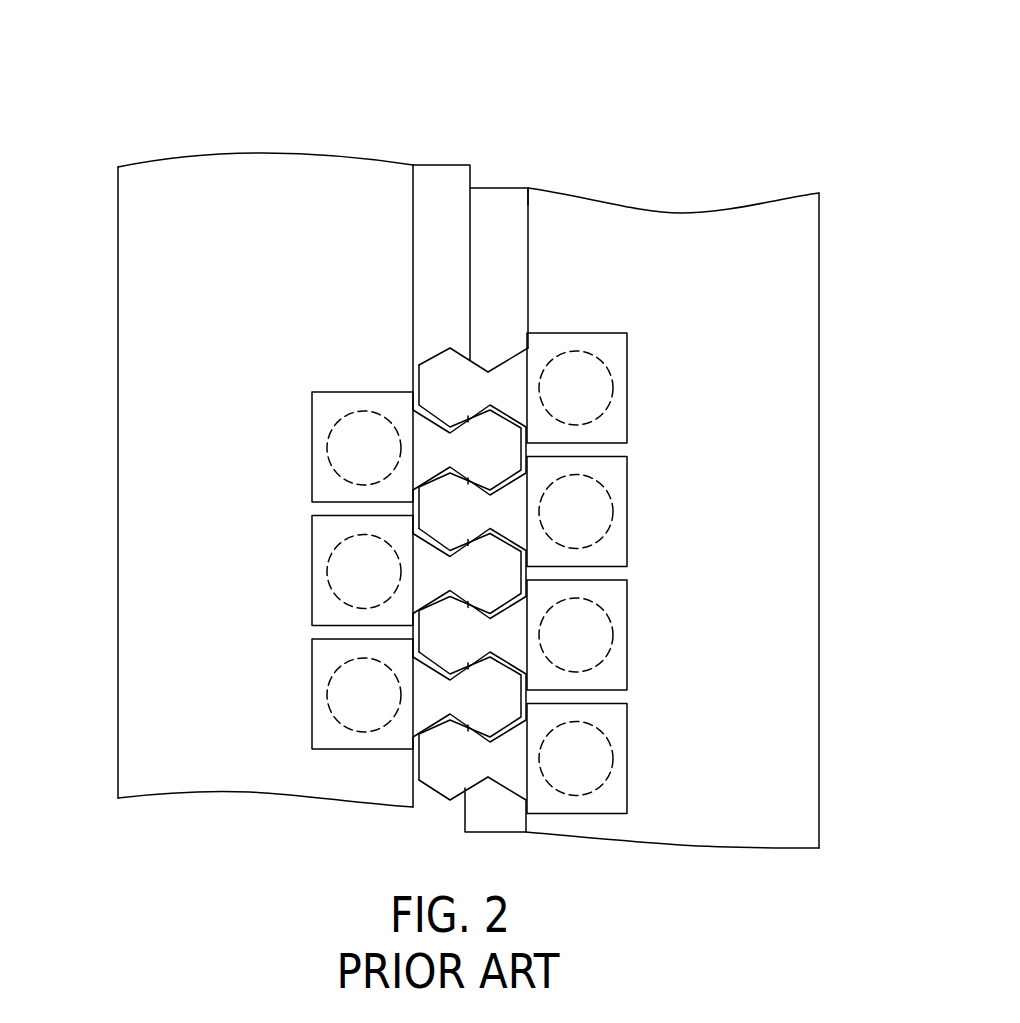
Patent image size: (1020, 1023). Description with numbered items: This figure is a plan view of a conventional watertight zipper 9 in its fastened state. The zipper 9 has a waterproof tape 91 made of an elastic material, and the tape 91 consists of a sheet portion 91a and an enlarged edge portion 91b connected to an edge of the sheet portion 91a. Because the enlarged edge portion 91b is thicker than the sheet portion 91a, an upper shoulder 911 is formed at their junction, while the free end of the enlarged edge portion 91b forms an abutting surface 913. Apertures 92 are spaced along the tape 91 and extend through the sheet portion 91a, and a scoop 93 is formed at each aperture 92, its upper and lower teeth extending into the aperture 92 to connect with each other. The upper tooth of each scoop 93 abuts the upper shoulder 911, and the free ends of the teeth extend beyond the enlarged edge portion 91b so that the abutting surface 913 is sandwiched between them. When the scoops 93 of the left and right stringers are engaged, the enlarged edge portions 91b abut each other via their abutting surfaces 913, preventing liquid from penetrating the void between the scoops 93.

The watertight zipper 9 is at (160, 112).
The waterproof tape 91 is at (570, 37).
The sheet portion 91a is at (607, 220).
The enlarged edge portion 91b is at (497, 207).
The upper shoulder 911 is at (528, 203).
The abutting surface 913 is at (468, 225).
The aperture 92 is at (600, 355).
The scoop 93 is at (325, 403).